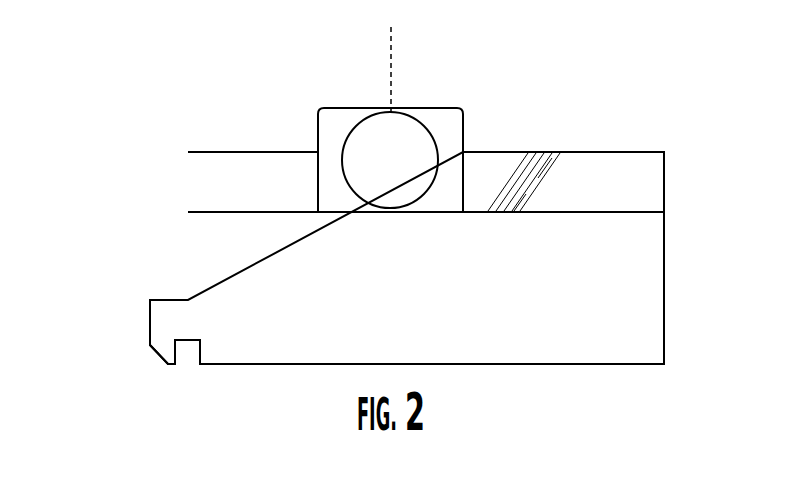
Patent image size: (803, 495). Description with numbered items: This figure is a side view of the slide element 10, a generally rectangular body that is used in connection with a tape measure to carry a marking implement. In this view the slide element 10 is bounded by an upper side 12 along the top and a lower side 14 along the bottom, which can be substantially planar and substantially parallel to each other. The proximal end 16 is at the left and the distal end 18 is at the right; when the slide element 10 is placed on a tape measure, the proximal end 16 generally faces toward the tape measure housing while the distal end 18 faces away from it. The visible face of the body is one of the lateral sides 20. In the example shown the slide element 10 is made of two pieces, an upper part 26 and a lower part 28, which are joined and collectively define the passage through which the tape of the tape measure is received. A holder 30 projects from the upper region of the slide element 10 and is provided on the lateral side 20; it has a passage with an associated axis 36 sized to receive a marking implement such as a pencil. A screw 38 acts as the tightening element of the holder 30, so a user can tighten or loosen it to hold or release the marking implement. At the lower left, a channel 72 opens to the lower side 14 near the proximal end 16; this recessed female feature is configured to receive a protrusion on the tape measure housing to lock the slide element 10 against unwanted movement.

The slide element 10 is at (129, 127).
The upper side 12 is at (579, 113).
The lower side 14 is at (567, 408).
The proximal end 16 is at (116, 250).
The distal end 18 is at (696, 237).
The lateral side 20 is at (567, 306).
The upper part 26 is at (635, 180).
The lower part 28 is at (637, 283).
The holder 30 is at (328, 117).
The axis 36 is at (393, 41).
The screw 38 is at (393, 143).
The channel 72 is at (186, 374).